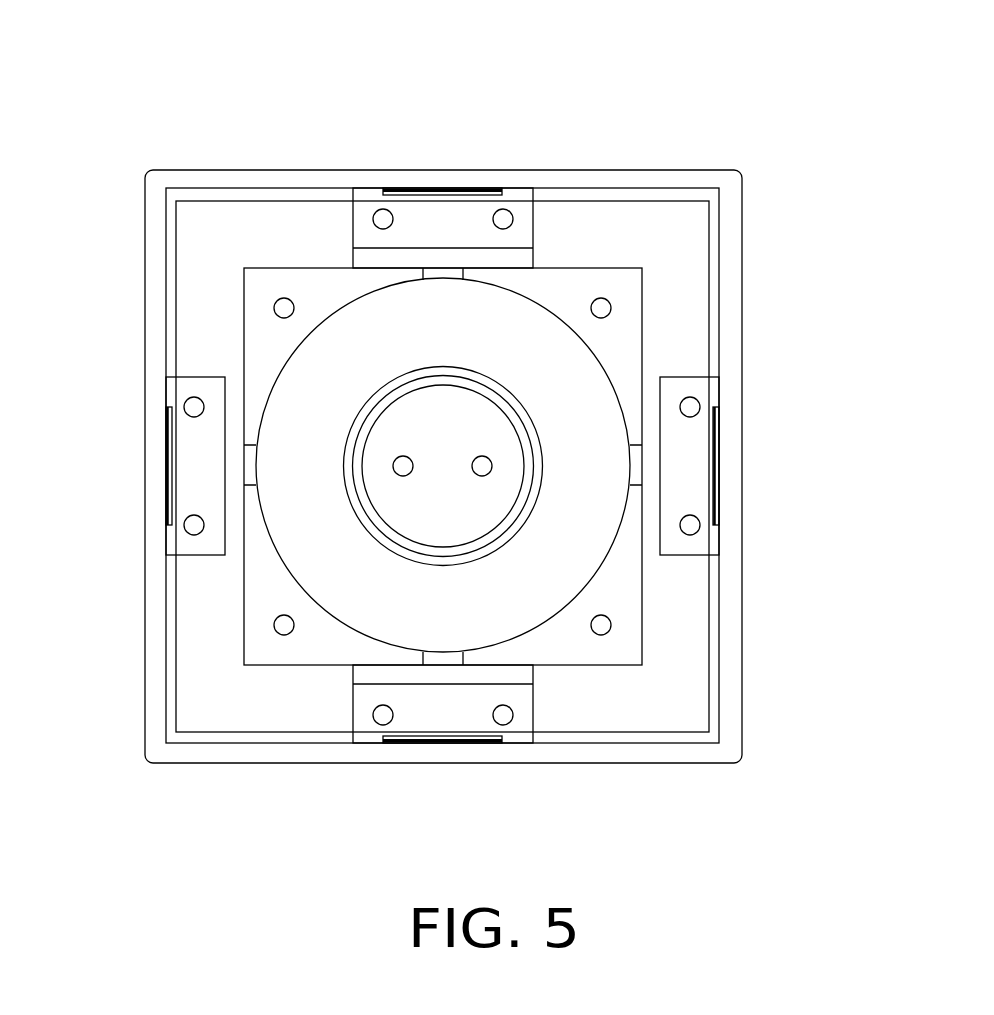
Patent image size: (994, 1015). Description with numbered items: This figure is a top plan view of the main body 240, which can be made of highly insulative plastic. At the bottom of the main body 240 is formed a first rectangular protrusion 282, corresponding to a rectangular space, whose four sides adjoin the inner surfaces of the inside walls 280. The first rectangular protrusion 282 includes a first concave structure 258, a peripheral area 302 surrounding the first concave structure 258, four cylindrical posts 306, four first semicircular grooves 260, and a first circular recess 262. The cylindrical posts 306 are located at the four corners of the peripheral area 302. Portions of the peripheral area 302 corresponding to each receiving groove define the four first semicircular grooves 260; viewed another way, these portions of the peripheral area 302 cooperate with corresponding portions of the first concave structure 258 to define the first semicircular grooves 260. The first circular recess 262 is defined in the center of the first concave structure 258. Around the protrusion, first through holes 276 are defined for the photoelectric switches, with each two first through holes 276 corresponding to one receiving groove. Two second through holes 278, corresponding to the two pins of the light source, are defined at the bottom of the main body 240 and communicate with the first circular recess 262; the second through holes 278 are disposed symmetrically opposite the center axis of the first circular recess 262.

The main body 240 is at (439, 86).
The inside walls 280 is at (212, 252).
The first through holes 276 is at (197, 408).
The second through holes 278 is at (400, 468).
The first rectangular protrusion 282 is at (575, 427).
The peripheral area 302 is at (597, 285).
The cylindrical posts 306 is at (605, 305).
The first circular recess 262 is at (460, 408).
The first semicircular grooves 260 is at (635, 463).
The first concave structure 258 is at (547, 568).